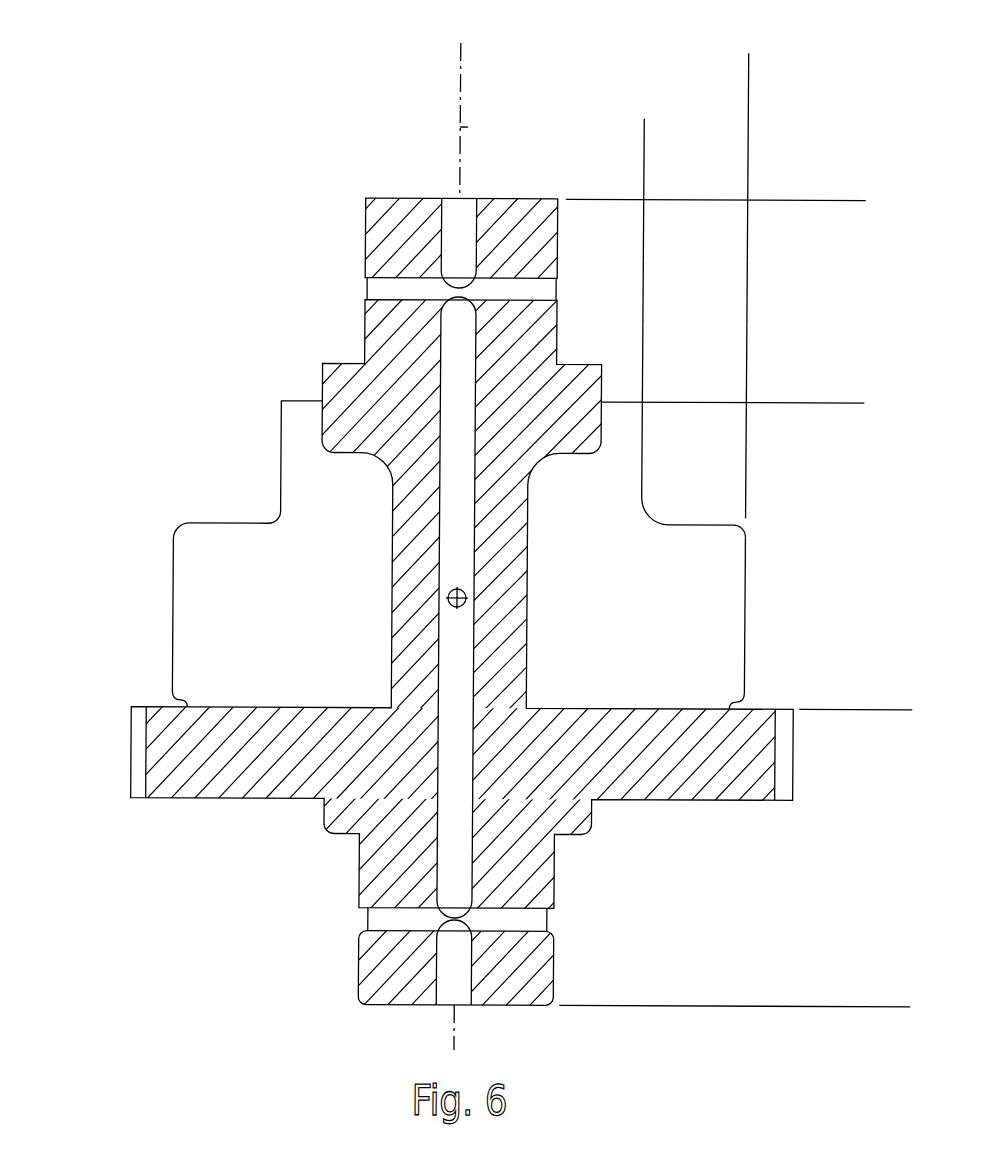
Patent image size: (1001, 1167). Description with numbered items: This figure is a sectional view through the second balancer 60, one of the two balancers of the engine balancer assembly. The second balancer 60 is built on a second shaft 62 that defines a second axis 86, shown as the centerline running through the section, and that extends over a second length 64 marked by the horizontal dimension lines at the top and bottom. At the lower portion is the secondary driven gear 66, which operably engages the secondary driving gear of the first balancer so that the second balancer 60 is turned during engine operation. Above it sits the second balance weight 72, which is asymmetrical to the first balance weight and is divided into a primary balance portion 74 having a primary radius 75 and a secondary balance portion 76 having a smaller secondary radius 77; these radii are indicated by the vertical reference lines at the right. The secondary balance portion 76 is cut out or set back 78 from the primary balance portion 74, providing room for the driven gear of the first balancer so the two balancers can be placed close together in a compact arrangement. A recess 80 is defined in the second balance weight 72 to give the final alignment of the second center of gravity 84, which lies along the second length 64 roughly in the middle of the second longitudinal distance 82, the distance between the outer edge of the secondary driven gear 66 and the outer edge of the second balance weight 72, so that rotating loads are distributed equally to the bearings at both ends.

The second balancer 60 is at (492, 556).
The second shaft 62 is at (551, 231).
The second length 64 is at (821, 185).
The secondary driven gear 66 is at (184, 759).
The second balance weight 72 is at (711, 501).
The primary balance portion 74 is at (715, 631).
The primary radius 75 is at (443, 82).
The secondary balance portion 76 is at (626, 447).
The secondary radius 77 is at (443, 158).
The set back or cut-out 78 is at (242, 501).
The recess 80 is at (347, 604).
The second longitudinal distance 82 is at (823, 387).
The second center of gravity 84 is at (450, 604).
The second axis 86 is at (463, 127).